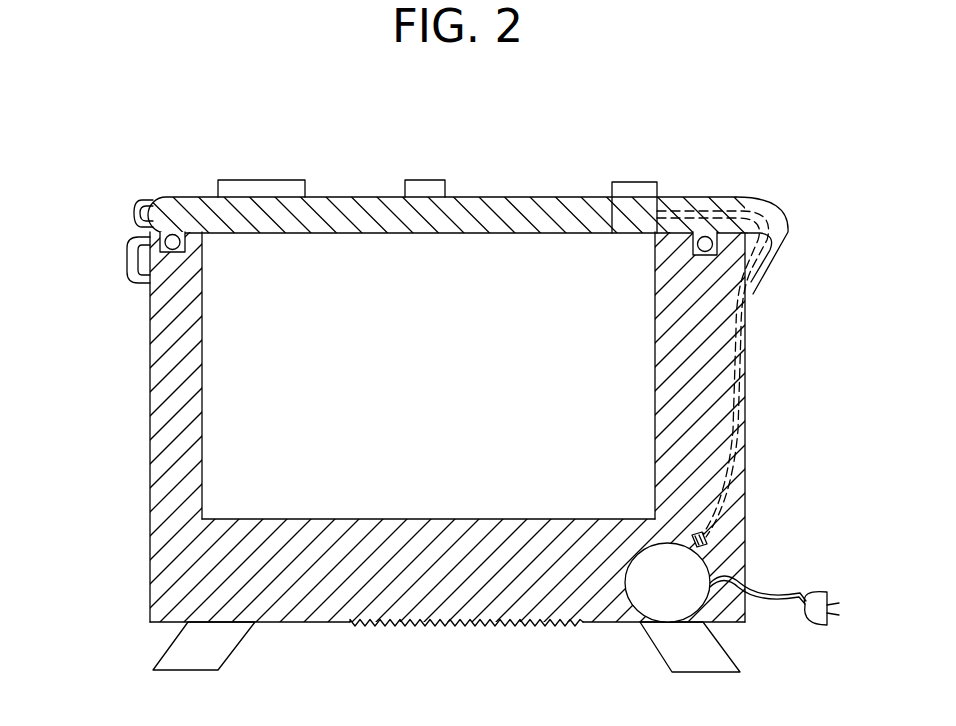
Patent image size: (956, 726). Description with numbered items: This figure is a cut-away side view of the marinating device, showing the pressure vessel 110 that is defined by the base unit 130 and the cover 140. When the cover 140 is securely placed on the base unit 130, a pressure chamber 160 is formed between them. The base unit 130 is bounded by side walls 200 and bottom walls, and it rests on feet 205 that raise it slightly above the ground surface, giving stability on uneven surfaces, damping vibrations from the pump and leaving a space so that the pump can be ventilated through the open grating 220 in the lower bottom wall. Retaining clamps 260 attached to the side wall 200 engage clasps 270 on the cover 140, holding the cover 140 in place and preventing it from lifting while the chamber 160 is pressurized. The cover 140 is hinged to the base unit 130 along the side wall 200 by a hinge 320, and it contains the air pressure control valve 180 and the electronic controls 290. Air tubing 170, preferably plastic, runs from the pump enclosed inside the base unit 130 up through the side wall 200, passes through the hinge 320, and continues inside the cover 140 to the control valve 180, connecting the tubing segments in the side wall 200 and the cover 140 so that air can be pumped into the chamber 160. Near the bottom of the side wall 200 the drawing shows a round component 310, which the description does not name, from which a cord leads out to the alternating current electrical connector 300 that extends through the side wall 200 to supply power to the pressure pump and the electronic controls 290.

The pressure vessel 110 is at (176, 524).
The base unit 130 is at (747, 328).
The cover 140 is at (497, 197).
The pressure chamber 160 is at (590, 424).
The air tubing 170 is at (752, 303).
The air pressure control valve 180 is at (635, 181).
The side wall 200 is at (148, 438).
The feet 205 is at (185, 672).
The open grating 220 is at (450, 626).
The retaining clamps 260 is at (127, 265).
The clasps 270 is at (133, 212).
The electronic controls 290 is at (240, 178).
The AC electrical connector 300 is at (818, 592).
The cord reel 310 is at (702, 542).
The hinge 320 is at (790, 215).